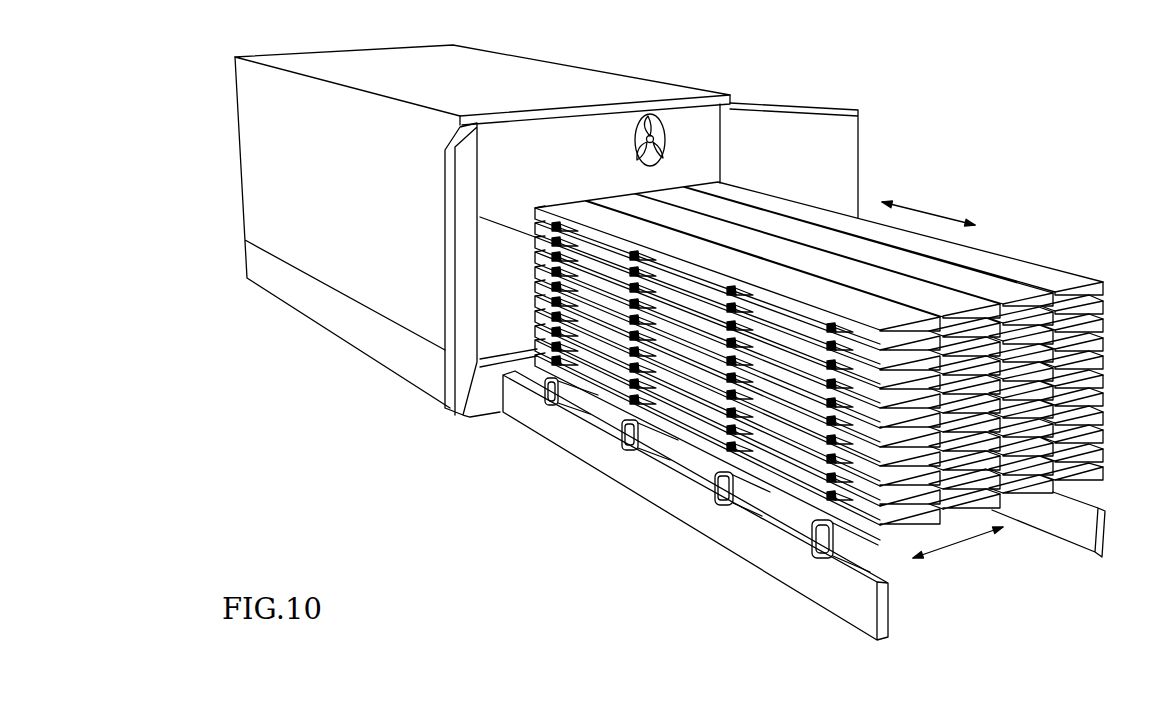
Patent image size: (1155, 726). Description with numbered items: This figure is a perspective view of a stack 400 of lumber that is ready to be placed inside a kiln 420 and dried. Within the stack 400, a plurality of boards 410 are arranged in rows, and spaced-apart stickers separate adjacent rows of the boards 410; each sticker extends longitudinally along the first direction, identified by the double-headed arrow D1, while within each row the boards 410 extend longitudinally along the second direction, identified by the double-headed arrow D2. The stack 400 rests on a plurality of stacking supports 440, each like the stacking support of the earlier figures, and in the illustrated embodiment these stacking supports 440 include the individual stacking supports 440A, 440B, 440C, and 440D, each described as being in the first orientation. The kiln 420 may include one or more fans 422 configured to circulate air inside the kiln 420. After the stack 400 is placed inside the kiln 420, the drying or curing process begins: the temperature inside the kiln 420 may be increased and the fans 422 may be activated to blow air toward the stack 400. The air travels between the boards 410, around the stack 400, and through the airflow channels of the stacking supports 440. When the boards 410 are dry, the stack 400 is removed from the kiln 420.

The stack 400 is at (1012, 95).
The kiln 420 is at (583, 67).
The fan 422 is at (663, 150).
The stacking supports 440 is at (877, 557).
The stacking support 440A is at (812, 556).
The stacking support 440B is at (715, 488).
The stacking support 440C is at (622, 440).
The stacking support 440D is at (545, 398).
The boards 410 is at (1050, 500).
The first direction D1 is at (962, 545).
The second direction D2 is at (932, 213).